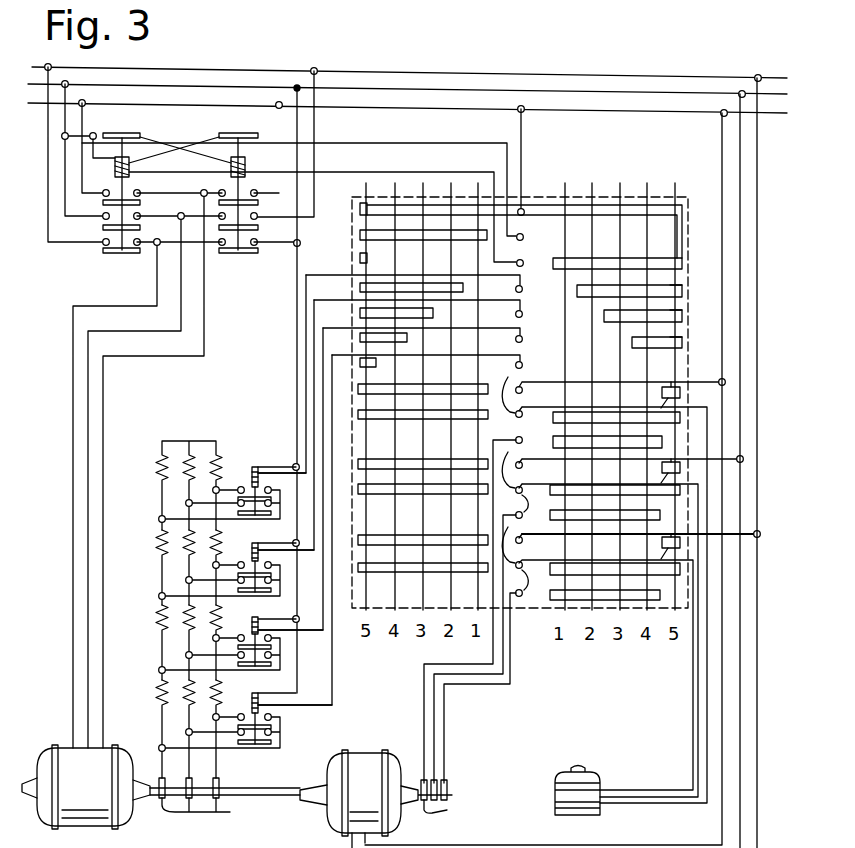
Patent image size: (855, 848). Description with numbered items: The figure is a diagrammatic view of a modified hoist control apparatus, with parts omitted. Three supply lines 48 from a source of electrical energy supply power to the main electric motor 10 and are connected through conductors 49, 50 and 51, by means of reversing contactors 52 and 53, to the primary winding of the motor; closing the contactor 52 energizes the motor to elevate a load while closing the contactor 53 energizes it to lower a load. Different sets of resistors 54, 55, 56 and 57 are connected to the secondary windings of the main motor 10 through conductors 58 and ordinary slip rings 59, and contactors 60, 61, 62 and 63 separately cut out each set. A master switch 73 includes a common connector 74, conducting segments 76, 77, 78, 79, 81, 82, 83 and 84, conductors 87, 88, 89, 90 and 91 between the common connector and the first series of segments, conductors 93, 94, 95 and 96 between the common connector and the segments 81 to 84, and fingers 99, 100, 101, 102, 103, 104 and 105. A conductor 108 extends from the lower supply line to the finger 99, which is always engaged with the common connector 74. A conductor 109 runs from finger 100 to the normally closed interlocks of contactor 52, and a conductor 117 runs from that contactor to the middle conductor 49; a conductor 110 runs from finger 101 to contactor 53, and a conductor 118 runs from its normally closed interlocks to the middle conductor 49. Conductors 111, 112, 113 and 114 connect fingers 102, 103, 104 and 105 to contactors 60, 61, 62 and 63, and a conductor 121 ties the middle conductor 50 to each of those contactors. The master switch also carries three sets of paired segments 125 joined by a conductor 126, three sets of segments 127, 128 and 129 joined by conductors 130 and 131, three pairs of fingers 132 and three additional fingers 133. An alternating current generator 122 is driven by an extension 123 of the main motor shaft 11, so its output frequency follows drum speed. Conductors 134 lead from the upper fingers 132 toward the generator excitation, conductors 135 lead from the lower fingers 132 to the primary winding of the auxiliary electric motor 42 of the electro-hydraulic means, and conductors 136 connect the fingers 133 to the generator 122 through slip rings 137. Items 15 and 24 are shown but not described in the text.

The main electric motor 10 is at (62, 748).
The main motor shaft 11 is at (24, 784).
The contact bar 15 is at (360, 236).
The supply line 24 is at (757, 770).
The auxiliary electric motor 42 is at (555, 791).
The supply lines 48 is at (604, 110).
The conductors 49 is at (60, 162).
The conductors 50 is at (298, 113).
The conductors 51 is at (103, 452).
The reversing contactor 52 is at (130, 167).
The reversing contactor 53 is at (231, 163).
The set of resistors 54 is at (160, 462).
The set of resistors 55 is at (186, 545).
The set of resistors 56 is at (186, 620).
The set of resistors 57 is at (186, 700).
The conductors 58 is at (218, 775).
The slip rings 59 is at (205, 813).
The contactor 60 is at (250, 468).
The contactor 61 is at (252, 545).
The contactor 62 is at (252, 620).
The contactor 63 is at (252, 696).
The master switch 73 is at (660, 200).
The common connector 74 is at (597, 200).
The segment 76 is at (463, 288).
The segment 77 is at (433, 313).
The segment 78 is at (407, 338).
The segment 79 is at (376, 364).
The segment 81 is at (612, 258).
The segment 82 is at (596, 295).
The segment 83 is at (625, 320).
The segment 84 is at (650, 346).
The conductor 87 is at (360, 216).
The conductor 88 is at (360, 258).
The conductor 89 is at (360, 283).
The conductor 90 is at (360, 312).
The conductor 91 is at (360, 338).
The conductor 93 is at (682, 233).
The conductor 94 is at (676, 278).
The conductor 95 is at (676, 302).
The conductor 96 is at (676, 327).
The finger 99 is at (522, 208).
The finger 100 is at (522, 236).
The finger 101 is at (523, 262).
The finger 102 is at (523, 288).
The finger 103 is at (523, 313).
The finger 104 is at (523, 338).
The finger 105 is at (523, 364).
The conductor 108 is at (523, 143).
The conductor 109 is at (405, 140).
The conductor 110 is at (407, 170).
The conductor 111 is at (306, 362).
The conductor 112 is at (314, 388).
The conductor 113 is at (323, 411).
The conductor 114 is at (332, 646).
The conductor 117 is at (98, 162).
The conductor 118 is at (100, 135).
The conductor 121 is at (296, 303).
The alternating current generator 122 is at (364, 756).
The extension of the main motor shaft 123 is at (254, 788).
The segments 125 is at (452, 390).
The conductor 126 is at (423, 482).
The segment 127 is at (668, 386).
The segment 128 is at (646, 410).
The segment 129 is at (566, 525).
The conductor 130 is at (671, 404).
The conductor 131 is at (655, 436).
The fingers 132 is at (518, 466).
The fingers 133 is at (535, 500).
The conductors 134 is at (639, 457).
The conductors 135 is at (707, 694).
The conductors 136 is at (493, 512).
The slip rings 137 is at (438, 812).